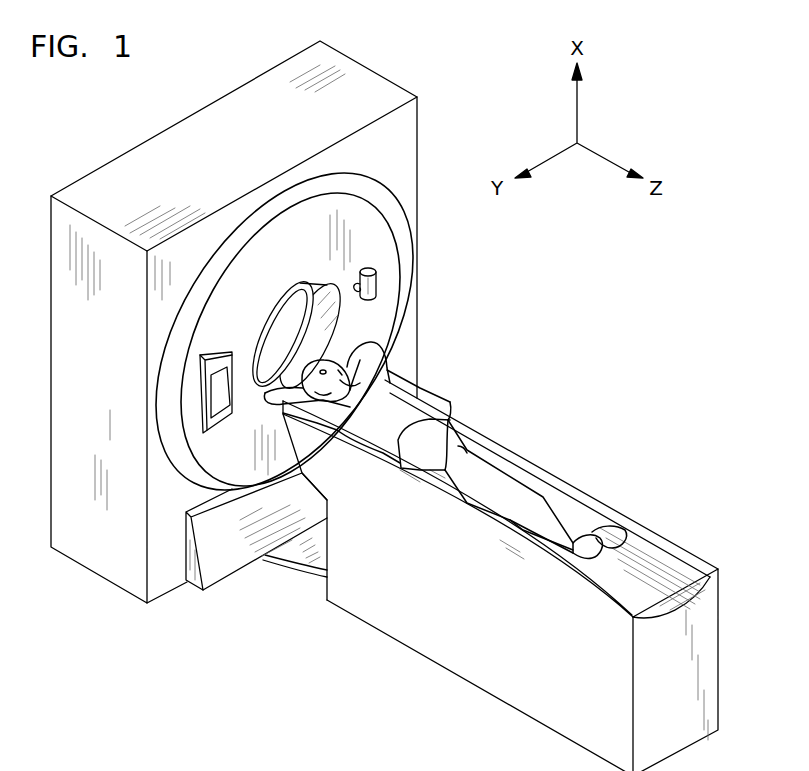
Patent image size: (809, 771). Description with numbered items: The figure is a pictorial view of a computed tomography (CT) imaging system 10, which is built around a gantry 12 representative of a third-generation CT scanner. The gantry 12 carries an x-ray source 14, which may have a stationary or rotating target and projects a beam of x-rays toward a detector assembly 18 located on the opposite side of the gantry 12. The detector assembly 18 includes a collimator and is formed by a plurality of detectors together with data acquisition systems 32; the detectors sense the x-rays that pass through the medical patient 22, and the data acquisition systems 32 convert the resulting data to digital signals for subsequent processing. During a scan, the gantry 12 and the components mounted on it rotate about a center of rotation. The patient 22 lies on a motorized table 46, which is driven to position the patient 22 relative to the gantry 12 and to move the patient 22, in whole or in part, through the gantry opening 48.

The CT imaging system 10 is at (547, 290).
The gantry 12 is at (393, 250).
The x-ray source 14 is at (378, 284).
The detector assembly 18 is at (218, 420).
The medical patient 22 is at (413, 413).
The data acquisition systems (DAS) 32 is at (220, 368).
The motorized table 46 is at (545, 702).
The gantry opening 48 is at (287, 330).